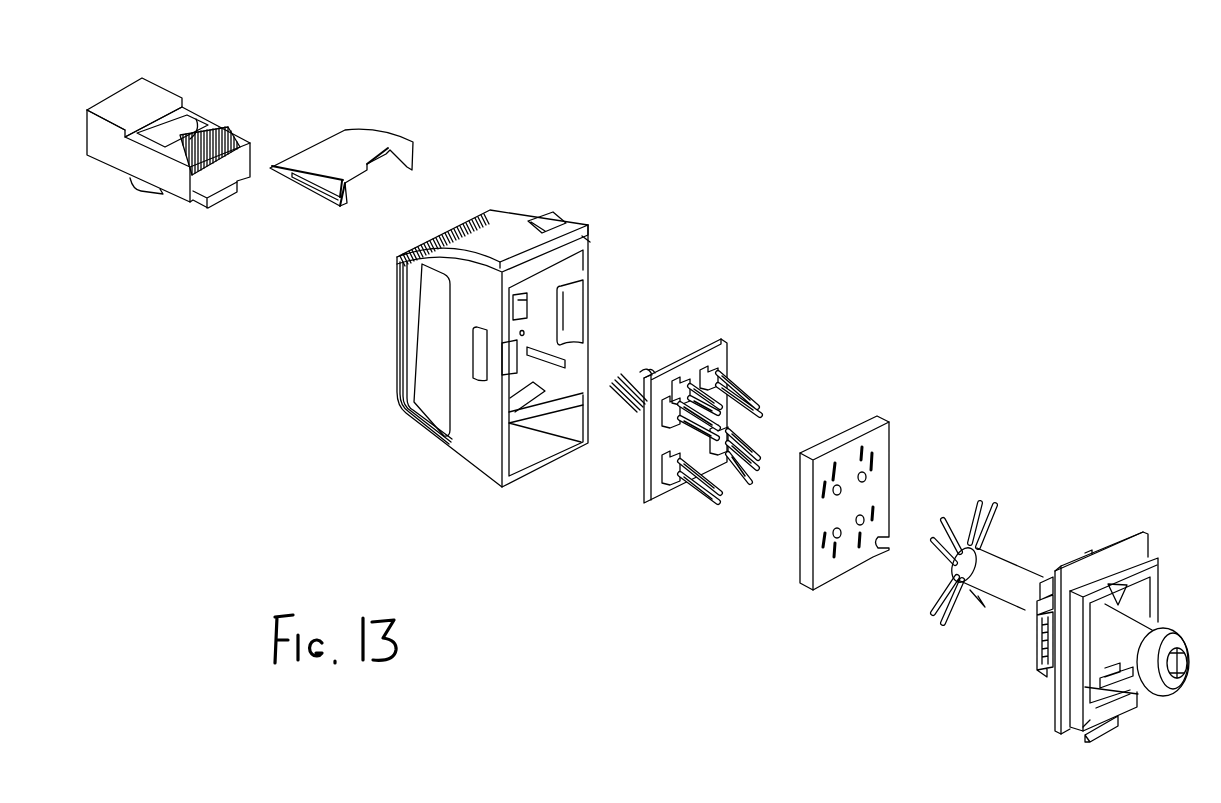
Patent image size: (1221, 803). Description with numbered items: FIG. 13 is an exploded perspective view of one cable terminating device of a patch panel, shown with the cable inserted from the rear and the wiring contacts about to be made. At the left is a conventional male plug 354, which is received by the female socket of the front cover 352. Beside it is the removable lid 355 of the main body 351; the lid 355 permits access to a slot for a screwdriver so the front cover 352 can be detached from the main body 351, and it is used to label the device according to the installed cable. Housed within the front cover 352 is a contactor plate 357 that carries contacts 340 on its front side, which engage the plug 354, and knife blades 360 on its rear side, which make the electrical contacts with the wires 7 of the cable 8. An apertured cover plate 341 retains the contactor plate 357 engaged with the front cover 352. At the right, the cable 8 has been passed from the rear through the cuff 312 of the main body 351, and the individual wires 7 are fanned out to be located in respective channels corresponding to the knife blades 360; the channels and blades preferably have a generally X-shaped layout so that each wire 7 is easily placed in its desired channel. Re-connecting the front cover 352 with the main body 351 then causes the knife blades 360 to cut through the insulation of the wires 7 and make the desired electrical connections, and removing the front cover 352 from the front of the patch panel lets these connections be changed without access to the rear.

The male plug 354 is at (148, 85).
The removable lid 355 is at (353, 140).
The front cover 352 is at (510, 230).
The contacts 340 is at (633, 382).
The contactor plate 357 is at (660, 493).
The knife blades 360 is at (757, 395).
The apertured cover plate 341 is at (842, 437).
The wires 7 is at (978, 497).
The cable 8 is at (1010, 597).
The main body 351 is at (1128, 537).
The cuff 312 is at (1117, 657).